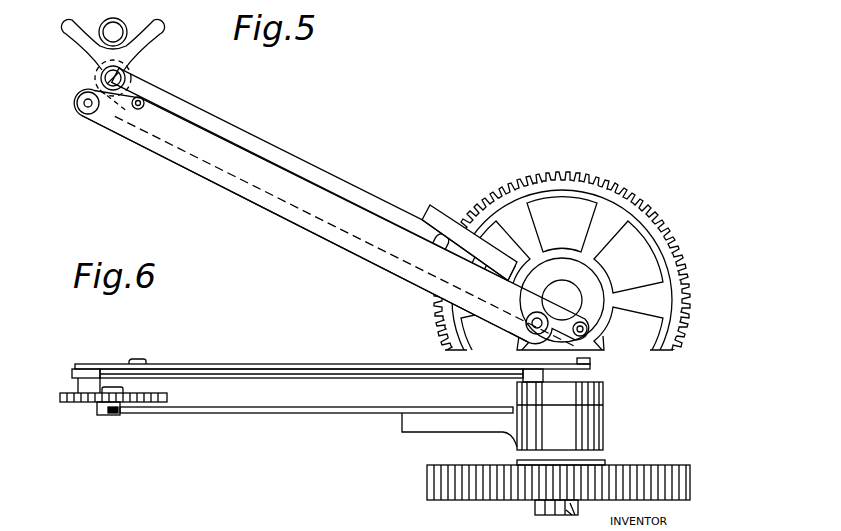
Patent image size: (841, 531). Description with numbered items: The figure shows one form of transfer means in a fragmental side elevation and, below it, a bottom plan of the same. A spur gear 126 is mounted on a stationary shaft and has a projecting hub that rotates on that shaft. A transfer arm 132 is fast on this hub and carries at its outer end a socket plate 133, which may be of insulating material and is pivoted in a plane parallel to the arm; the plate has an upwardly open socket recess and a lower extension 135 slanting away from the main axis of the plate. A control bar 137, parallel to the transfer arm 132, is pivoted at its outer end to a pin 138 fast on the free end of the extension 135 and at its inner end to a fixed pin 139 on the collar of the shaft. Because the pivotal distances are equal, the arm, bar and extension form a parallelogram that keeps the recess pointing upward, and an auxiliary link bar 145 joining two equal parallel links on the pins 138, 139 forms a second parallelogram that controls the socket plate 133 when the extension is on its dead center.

In FIG. 5, the spur gear 126 is at (622, 200).
In FIG. 6, the spur gear 126 is at (635, 475).
In FIG. 5, the transfer arm 132 is at (341, 183).
In FIG. 6, the transfer arm 132 is at (272, 413).
In FIG. 5, the socket plate 133 is at (155, 45).
In FIG. 6, the socket plate 133 is at (60, 398).
In FIG. 5, the lower extension 135 is at (96, 81).
In FIG. 5, the control bar 137 is at (312, 222).
In FIG. 6, the control bar 137 is at (305, 377).
In FIG. 5, the pin 138 is at (82, 112).
In FIG. 6, the pin 138 is at (87, 368).
In FIG. 5, the fixed pin 139 is at (550, 317).
In FIG. 5, the auxiliary link bar 145 is at (272, 165).
In FIG. 6, the auxiliary link bar 145 is at (230, 364).